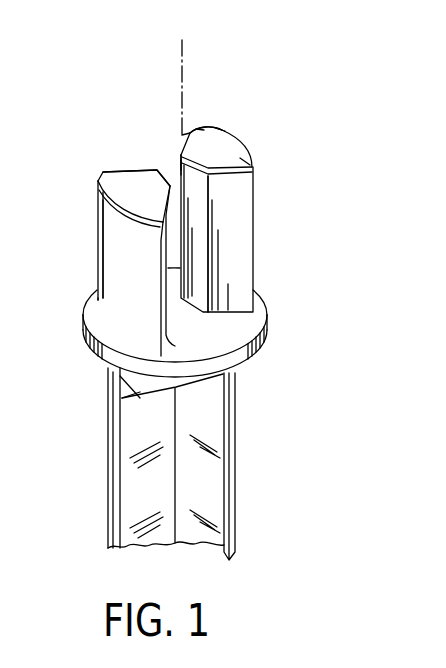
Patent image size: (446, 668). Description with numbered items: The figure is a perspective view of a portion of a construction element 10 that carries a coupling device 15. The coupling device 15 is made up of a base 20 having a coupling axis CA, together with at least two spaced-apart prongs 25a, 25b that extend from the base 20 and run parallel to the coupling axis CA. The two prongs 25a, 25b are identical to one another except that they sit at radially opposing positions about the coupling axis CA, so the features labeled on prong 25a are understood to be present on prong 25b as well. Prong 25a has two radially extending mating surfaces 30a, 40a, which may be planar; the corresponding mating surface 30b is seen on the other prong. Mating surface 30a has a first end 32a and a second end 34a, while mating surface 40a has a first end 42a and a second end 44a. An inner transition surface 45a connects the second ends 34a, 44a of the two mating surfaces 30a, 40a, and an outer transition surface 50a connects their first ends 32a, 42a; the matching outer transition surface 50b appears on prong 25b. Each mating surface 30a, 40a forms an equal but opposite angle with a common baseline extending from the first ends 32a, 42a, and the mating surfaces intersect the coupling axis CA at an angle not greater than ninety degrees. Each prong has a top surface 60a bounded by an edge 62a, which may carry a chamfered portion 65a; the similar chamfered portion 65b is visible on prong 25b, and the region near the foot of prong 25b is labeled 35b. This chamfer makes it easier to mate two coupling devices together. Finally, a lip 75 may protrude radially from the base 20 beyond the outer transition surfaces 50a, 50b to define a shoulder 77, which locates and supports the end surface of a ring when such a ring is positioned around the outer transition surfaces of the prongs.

The coupling axis CA is at (182, 53).
The construction element 10 is at (351, 422).
The coupling device 15 is at (410, 223).
The base 20 is at (137, 484).
The prong 25a is at (233, 148).
The prong 25b is at (123, 185).
The mating surface 30a is at (241, 238).
The mating surface 30b is at (118, 170).
The first end 32a is at (252, 173).
The second end 34a is at (212, 180).
The base of second prong 35b is at (187, 352).
The mating surface 40a is at (181, 154).
The first end 42a is at (188, 132).
The second end 44a is at (181, 167).
The inner transition surface 45a is at (201, 276).
The outer transition surface 50a is at (230, 137).
The outer transition surface 50b is at (128, 280).
The top surface 60a is at (203, 130).
The edge 62a is at (222, 132).
The chamfered portion 65a is at (240, 160).
The chamfered portion 65b is at (125, 208).
The lip 75 is at (135, 378).
The shoulder 77 is at (140, 392).